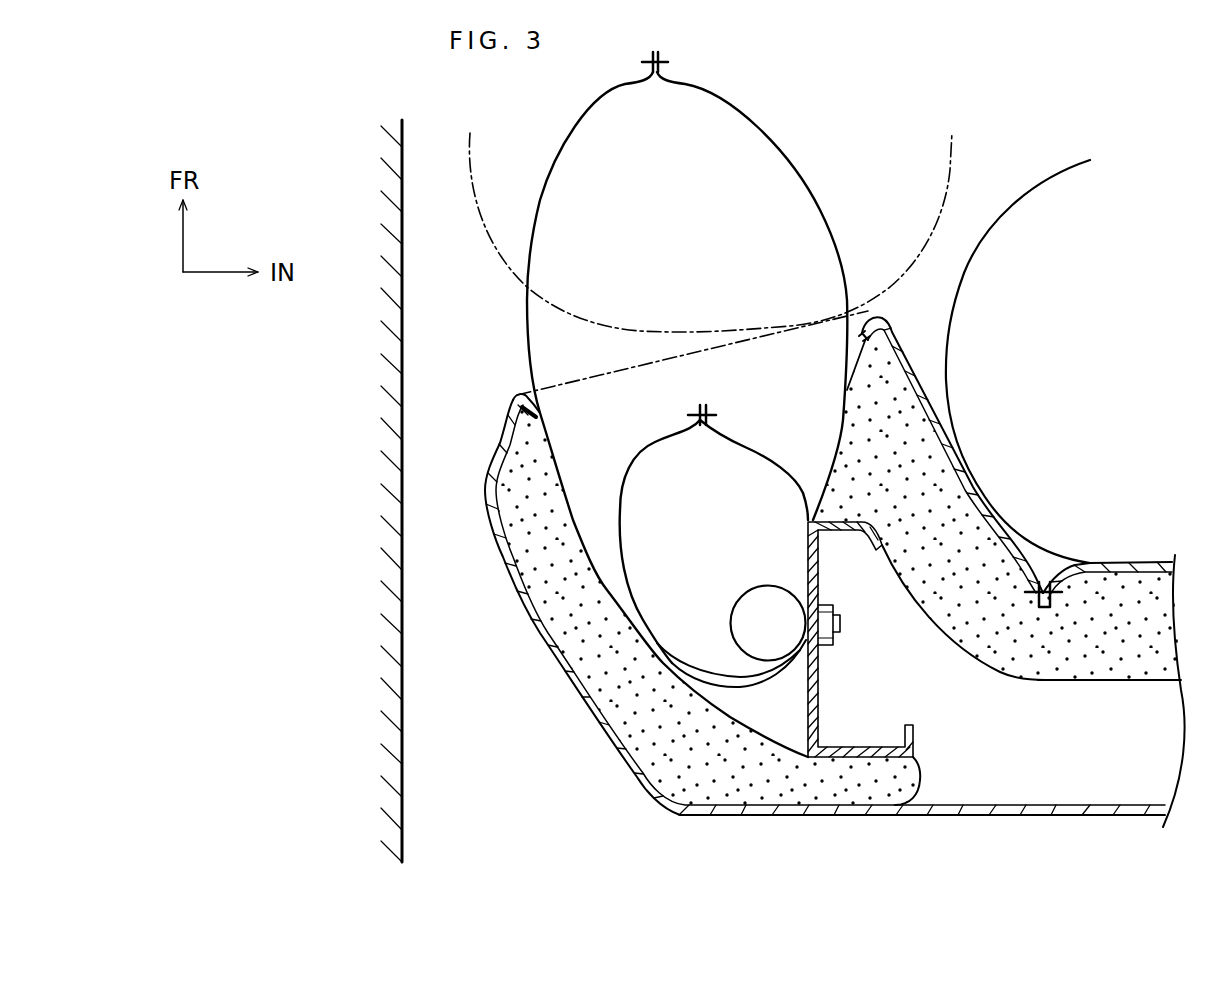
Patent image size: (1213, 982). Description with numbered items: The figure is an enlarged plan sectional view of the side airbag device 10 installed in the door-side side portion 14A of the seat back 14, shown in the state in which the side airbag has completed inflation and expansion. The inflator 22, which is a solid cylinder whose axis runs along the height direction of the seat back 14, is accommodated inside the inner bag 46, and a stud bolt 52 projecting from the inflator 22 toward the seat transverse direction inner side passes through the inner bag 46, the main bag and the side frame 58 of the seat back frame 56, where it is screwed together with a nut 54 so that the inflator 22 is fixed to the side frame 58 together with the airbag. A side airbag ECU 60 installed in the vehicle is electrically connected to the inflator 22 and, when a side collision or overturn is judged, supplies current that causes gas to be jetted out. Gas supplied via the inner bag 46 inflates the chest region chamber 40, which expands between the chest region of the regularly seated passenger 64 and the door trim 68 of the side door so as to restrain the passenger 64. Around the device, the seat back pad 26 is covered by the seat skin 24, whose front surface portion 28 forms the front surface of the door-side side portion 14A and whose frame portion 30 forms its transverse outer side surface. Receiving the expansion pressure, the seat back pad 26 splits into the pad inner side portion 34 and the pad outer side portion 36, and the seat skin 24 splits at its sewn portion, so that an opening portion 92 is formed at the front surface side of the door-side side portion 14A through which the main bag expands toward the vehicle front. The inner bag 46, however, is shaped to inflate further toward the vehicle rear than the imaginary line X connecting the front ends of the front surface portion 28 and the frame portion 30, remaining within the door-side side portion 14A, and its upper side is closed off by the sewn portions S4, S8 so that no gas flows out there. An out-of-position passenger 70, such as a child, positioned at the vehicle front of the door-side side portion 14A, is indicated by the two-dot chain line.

The side airbag device 10 is at (692, 452).
The seat back 14 is at (999, 566).
The door-side side portion 14A is at (917, 346).
The inflator 22 is at (750, 588).
The seat skin 24 is at (1000, 507).
The seat back pad 26 is at (1068, 684).
The front surface portion 28 is at (960, 437).
The frame portion 30 is at (509, 568).
The pad inner side portion 34 is at (888, 420).
The pad outer side portion 36 is at (528, 490).
The chest region chamber 40 is at (690, 254).
The inner bag 46 is at (758, 450).
The stud bolt 52 is at (841, 624).
The nut 54 is at (826, 602).
The seat back frame 56 is at (871, 639).
The side frame 58 is at (819, 688).
The side airbag ECU 60 is at (407, 706).
The passenger 64 is at (1026, 192).
The door trim 68 is at (404, 765).
The passenger 70 is at (956, 153).
The opening portion 92 is at (518, 377).
The sewn portion S4 is at (708, 412).
The sewn portion S8 is at (669, 62).
The imaginary line X is at (633, 380).